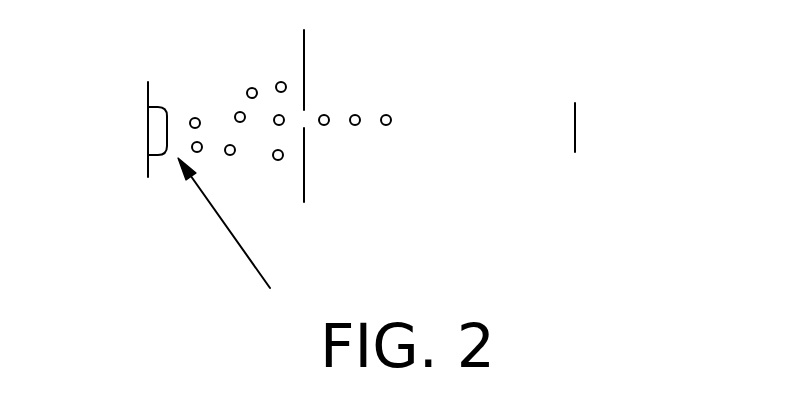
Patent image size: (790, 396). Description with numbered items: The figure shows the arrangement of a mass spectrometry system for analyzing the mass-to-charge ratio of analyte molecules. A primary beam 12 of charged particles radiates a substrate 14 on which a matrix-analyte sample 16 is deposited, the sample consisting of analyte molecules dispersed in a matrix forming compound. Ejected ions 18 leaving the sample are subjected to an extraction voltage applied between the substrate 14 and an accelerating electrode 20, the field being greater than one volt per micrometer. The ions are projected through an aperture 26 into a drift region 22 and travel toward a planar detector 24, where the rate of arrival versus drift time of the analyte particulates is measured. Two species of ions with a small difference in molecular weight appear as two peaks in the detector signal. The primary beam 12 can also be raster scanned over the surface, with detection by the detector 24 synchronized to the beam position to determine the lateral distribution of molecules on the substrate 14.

The primary beam 12 is at (225, 227).
The substrate 14 is at (148, 95).
The matrix-analyte sample 16 is at (159, 139).
The ejected ions 18 is at (252, 87).
The accelerating electrode 20 is at (305, 172).
The drift region 22 is at (487, 191).
The planar detector 24 is at (576, 130).
The aperture 26 is at (312, 107).